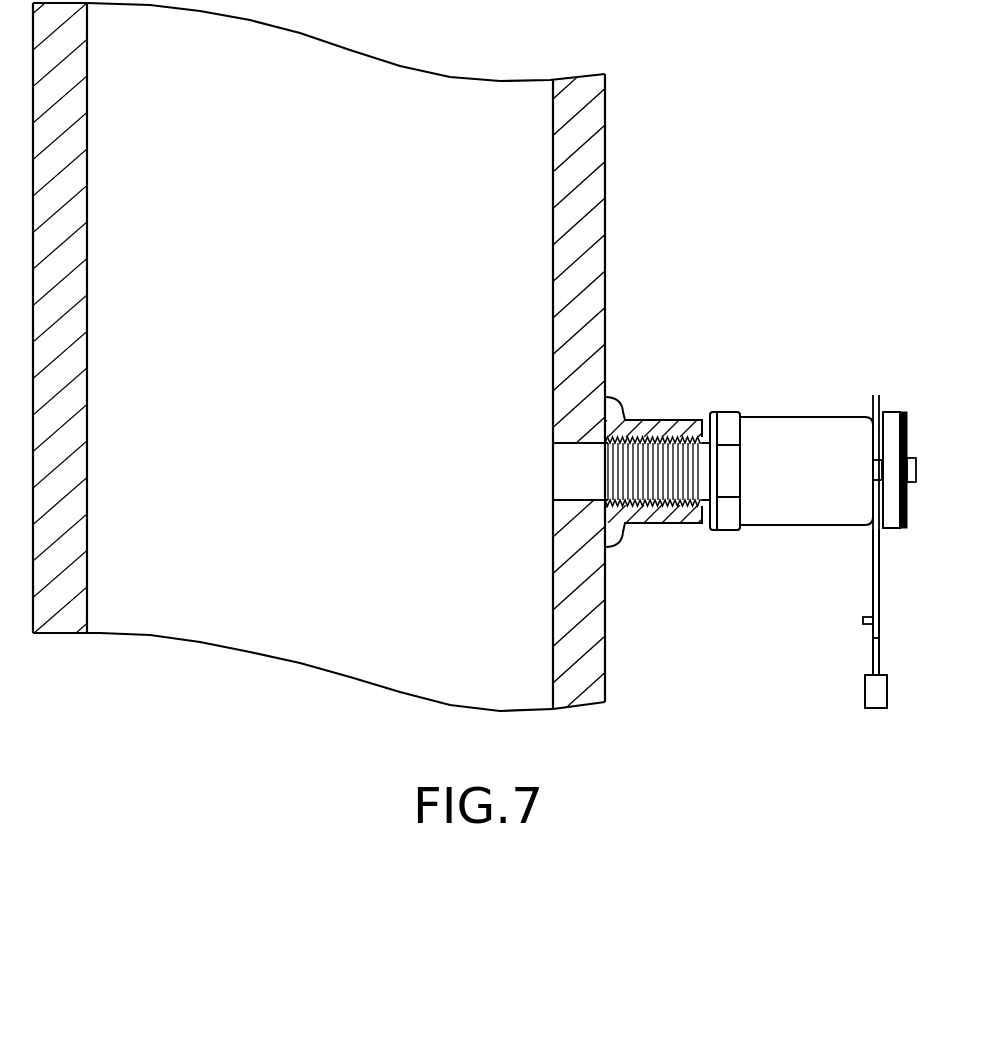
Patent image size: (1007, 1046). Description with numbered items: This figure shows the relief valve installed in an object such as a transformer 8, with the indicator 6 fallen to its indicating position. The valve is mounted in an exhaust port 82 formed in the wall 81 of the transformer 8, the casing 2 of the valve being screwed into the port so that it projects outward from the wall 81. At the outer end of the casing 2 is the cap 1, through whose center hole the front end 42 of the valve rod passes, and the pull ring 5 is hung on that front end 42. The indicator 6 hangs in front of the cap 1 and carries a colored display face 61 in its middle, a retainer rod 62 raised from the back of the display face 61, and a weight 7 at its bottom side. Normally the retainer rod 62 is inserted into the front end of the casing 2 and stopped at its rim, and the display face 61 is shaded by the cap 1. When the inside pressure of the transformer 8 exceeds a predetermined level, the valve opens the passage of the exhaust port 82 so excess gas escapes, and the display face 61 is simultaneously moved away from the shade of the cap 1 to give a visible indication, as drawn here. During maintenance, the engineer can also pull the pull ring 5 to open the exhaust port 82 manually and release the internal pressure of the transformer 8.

The transformer 8 is at (615, 152).
The wall 81 is at (588, 277).
The exhaust port 82 is at (658, 420).
The casing 2 is at (779, 515).
The indicator 6 is at (877, 458).
The colored display face 61 is at (878, 565).
The retainer rod 62 is at (866, 621).
The weight 7 is at (880, 695).
The cap 1 is at (893, 413).
The pull ring 5 is at (908, 432).
The front end 42 is at (917, 468).